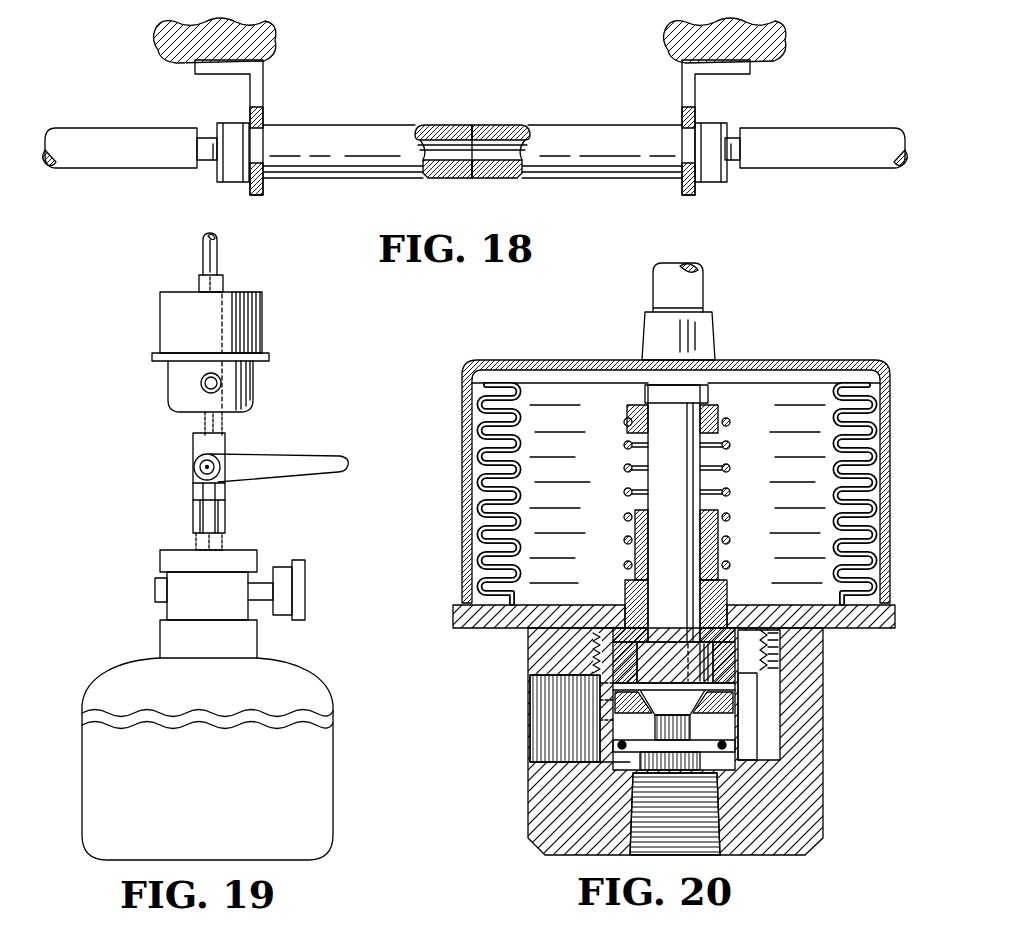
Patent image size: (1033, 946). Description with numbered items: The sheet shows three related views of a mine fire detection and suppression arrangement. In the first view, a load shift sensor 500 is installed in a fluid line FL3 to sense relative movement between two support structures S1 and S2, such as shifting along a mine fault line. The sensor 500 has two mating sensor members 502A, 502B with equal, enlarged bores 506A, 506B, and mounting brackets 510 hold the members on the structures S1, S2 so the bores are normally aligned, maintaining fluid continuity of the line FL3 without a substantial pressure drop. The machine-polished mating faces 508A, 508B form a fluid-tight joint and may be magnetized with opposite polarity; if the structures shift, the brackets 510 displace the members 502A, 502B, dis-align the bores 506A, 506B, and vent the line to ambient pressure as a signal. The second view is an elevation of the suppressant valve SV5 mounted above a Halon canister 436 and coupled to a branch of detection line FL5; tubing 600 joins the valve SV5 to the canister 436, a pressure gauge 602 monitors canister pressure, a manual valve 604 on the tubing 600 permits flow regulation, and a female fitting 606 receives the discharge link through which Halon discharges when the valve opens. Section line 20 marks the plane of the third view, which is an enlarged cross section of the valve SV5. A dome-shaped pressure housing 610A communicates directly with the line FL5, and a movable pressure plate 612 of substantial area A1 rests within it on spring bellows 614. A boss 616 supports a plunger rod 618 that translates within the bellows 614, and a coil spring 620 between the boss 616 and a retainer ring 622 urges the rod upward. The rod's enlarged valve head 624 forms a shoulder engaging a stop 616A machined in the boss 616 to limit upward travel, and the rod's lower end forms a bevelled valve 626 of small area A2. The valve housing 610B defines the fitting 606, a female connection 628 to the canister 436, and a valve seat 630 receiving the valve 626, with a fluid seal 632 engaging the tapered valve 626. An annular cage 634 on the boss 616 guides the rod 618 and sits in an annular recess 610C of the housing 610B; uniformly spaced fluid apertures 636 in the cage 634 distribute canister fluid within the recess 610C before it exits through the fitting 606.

In FIG. 18, the load shift sensor 500 is at (473, 107).
In FIG. 18, the mating sensor member 502A is at (362, 125).
In FIG. 18, the mating sensor member 502B is at (568, 125).
In FIG. 18, the bore 506A is at (452, 178).
In FIG. 18, the bore 506B is at (502, 178).
In FIG. 18, the mating face 508A is at (465, 127).
In FIG. 18, the mating face 508B is at (483, 127).
In FIG. 18, the mounting bracket 510 is at (263, 80).
In FIG. 18, the support structure S1 is at (277, 25).
In FIG. 18, the support structure S2 is at (668, 30).
In FIG. 18, the fluid line FL3 is at (72, 140).
In FIG. 19, the detection line FL5 is at (198, 262).
In FIG. 20, the detection line FL5 is at (706, 291).
In FIG. 19, the suppressant valve SV5 is at (160, 326).
In FIG. 20, the suppressant valve SV5 is at (456, 395).
In FIG. 19, the section line 20- 20 is at (138, 248).
In FIG. 19, the female fitting 606 is at (200, 383).
In FIG. 20, the female fitting 606 is at (620, 745).
In FIG. 19, the manual valve 604 is at (292, 470).
In FIG. 19, the tubing 600 is at (193, 514).
In FIG. 19, the pressure gauge 602 is at (305, 600).
In FIG. 19, the Halon canister 436 is at (322, 797).
In FIG. 20, the movable pressure plate 612 is at (553, 373).
In FIG. 20, the spring bellows 614 is at (480, 423).
In FIG. 20, the boss 616 is at (627, 598).
In FIG. 20, the stop 616A is at (707, 637).
In FIG. 20, the plunger rod 618 is at (673, 448).
In FIG. 20, the coil spring 620 is at (630, 550).
In FIG. 20, the retainer ring 622 is at (730, 412).
In FIG. 20, the valve head 624 is at (595, 650).
In FIG. 20, the bevelled valve 626 is at (757, 712).
In FIG. 20, the female connection 628 is at (633, 813).
In FIG. 20, the valve seat 630 is at (720, 750).
In FIG. 20, the fluid seal 632 is at (553, 770).
In FIG. 20, the annular cage 634 is at (763, 657).
In FIG. 20, the fluid apertures 636 is at (620, 715).
In FIG. 20, the dome-shaped pressure housing 610A is at (893, 383).
In FIG. 20, the valve housing 610B is at (823, 770).
In FIG. 20, the annular recess 610C is at (590, 656).
In FIG. 20, the selected area A1 is at (797, 362).
In FIG. 20, the surface area A2 is at (673, 713).